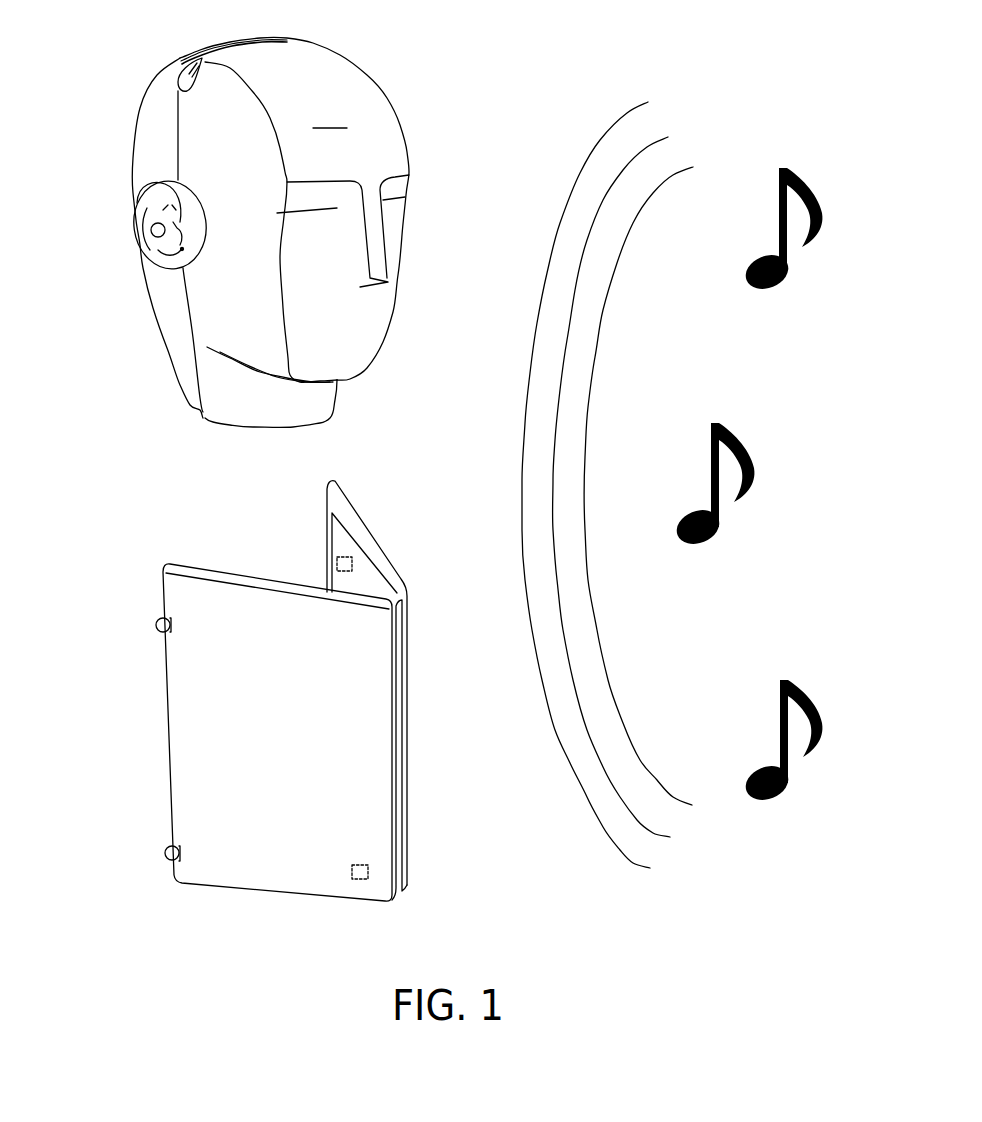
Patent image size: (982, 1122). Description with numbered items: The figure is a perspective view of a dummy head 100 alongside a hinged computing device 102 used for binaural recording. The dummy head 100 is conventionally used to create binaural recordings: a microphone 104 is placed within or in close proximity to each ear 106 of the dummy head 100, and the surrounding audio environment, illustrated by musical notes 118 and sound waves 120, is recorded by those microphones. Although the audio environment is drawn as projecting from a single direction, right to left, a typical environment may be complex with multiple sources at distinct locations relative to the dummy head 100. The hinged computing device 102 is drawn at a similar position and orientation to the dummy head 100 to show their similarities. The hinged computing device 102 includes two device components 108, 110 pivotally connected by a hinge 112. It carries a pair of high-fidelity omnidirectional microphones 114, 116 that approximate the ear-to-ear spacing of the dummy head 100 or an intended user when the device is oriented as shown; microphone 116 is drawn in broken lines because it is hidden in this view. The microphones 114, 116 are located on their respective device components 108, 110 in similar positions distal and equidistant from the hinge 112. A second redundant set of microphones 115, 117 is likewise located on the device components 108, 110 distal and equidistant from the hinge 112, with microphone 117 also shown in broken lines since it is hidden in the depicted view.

The dummy head 100 is at (270, 232).
The hinged computing device 102 is at (225, 540).
The microphone 104 is at (151, 247).
The ear 106 is at (157, 187).
The device component 108 is at (207, 888).
The device component 110 is at (372, 532).
The hinge 112 is at (402, 800).
The microphone 114 is at (160, 630).
The microphone 115 is at (168, 856).
The microphone 116 is at (336, 562).
The microphone 117 is at (351, 872).
The musical notes 118 is at (738, 133).
The sound waves 120 is at (572, 128).